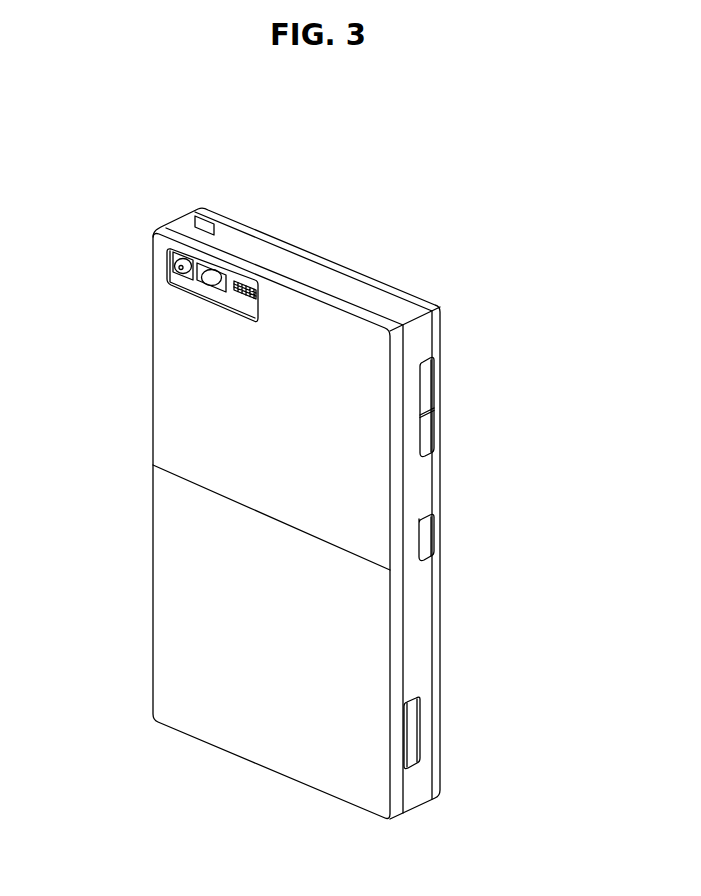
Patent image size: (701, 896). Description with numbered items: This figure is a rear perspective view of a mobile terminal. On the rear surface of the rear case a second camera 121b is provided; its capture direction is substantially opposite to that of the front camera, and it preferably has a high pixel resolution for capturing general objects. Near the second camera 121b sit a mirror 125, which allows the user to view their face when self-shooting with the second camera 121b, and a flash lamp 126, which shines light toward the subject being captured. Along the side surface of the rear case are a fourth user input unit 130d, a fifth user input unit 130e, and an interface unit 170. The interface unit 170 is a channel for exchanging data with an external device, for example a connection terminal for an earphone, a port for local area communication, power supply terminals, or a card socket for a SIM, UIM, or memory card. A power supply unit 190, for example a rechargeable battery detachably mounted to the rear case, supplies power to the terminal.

The mirror 125 is at (178, 262).
The second camera 121b is at (209, 273).
The flash lamp 126 is at (248, 289).
The fourth user input unit 130d is at (428, 380).
The fifth user input unit 130e is at (428, 532).
The interface unit 170 is at (412, 742).
The power supply unit 190 is at (173, 594).